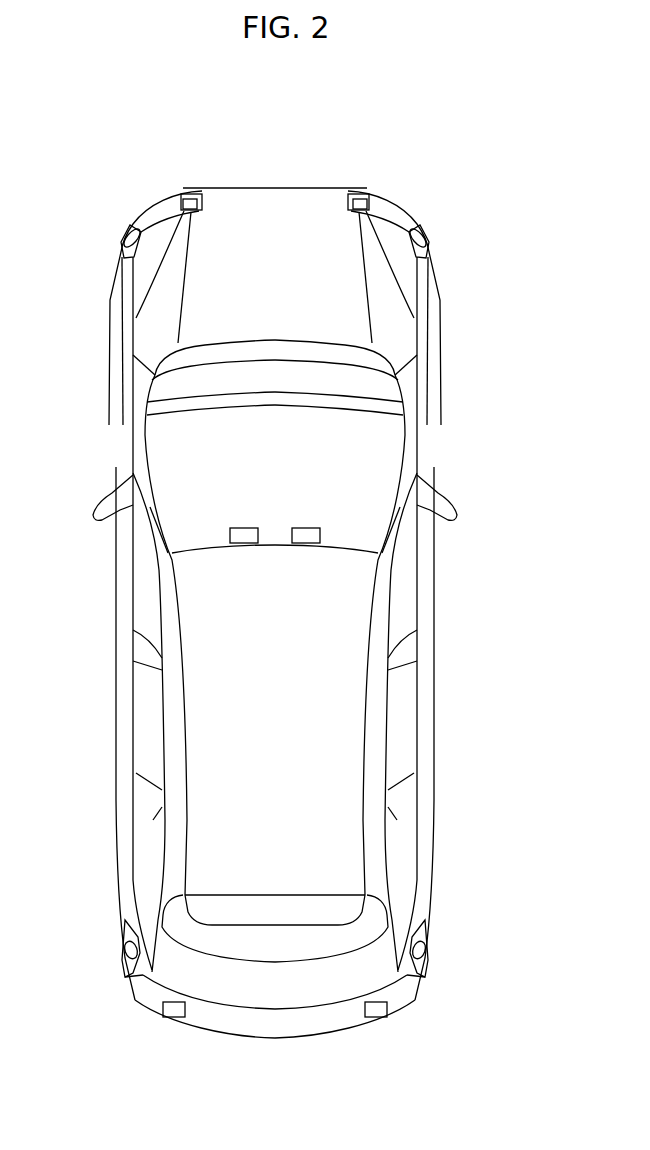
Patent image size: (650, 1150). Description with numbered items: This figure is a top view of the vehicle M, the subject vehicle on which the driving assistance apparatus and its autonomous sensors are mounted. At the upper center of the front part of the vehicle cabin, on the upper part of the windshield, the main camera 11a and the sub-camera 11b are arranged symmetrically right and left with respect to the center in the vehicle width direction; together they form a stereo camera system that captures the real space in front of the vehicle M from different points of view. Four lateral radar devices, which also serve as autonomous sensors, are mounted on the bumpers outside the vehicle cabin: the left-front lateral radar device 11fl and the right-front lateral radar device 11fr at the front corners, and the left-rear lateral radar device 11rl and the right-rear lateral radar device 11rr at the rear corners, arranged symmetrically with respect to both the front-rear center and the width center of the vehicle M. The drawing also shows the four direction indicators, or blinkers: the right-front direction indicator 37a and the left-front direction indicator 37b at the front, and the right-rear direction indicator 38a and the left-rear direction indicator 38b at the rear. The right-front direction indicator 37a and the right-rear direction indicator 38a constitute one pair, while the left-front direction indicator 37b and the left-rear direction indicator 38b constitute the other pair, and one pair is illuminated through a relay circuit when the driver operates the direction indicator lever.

The vehicle M is at (437, 613).
The right-front direction indicator 37a is at (360, 190).
The left-front direction indicator 37b is at (190, 190).
The left-front lateral radar device 11fl is at (125, 235).
The right-front lateral radar device 11fr is at (425, 235).
The main camera 11a is at (306, 527).
The sub-camera 11b is at (244, 527).
The left-rear lateral radar device 11rl is at (123, 953).
The right-rear lateral radar device 11rr is at (427, 953).
The right-rear direction indicator 38a is at (378, 1017).
The left-rear direction indicator 38b is at (172, 1017).